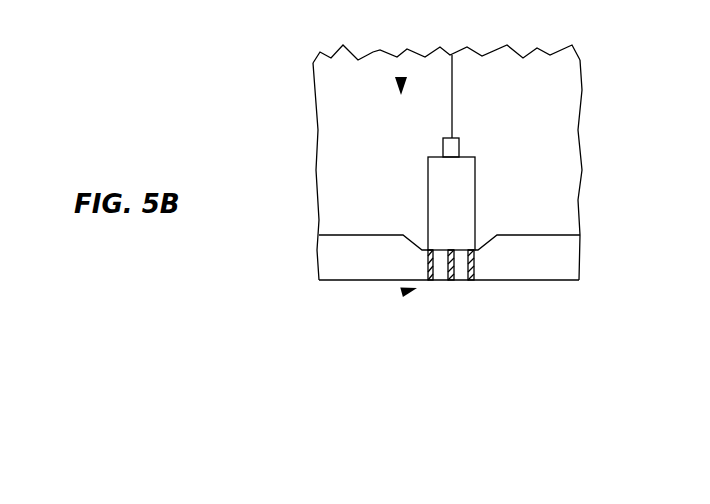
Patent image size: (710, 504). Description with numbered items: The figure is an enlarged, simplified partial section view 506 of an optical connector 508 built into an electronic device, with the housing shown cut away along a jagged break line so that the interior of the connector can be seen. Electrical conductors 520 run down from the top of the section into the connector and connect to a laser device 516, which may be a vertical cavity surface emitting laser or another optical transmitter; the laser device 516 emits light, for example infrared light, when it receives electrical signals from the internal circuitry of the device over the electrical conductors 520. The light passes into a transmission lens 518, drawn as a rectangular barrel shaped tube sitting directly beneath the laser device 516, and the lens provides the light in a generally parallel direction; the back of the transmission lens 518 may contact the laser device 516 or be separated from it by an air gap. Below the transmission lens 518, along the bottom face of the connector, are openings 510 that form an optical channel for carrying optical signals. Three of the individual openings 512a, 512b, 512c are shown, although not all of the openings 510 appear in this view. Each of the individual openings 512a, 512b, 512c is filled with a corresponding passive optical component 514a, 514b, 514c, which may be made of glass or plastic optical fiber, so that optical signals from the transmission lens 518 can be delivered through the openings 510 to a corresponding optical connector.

The simplified, partial section view 506 is at (581, 60).
The optical connector 508 is at (400, 80).
The openings 510 is at (410, 290).
The individual opening 512a is at (470, 280).
The individual opening 512b is at (452, 280).
The individual opening 512c is at (432, 280).
The passive optical component 514a is at (430, 252).
The passive optical component 514b is at (448, 258).
The passive optical component 514c is at (468, 262).
The laser device 516 is at (455, 148).
The transmission lens 518 is at (457, 203).
The electrical conductors 520 is at (452, 87).